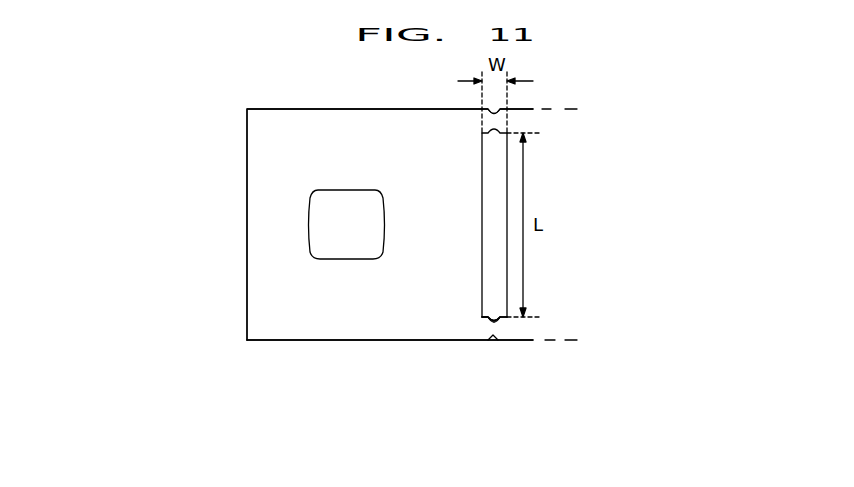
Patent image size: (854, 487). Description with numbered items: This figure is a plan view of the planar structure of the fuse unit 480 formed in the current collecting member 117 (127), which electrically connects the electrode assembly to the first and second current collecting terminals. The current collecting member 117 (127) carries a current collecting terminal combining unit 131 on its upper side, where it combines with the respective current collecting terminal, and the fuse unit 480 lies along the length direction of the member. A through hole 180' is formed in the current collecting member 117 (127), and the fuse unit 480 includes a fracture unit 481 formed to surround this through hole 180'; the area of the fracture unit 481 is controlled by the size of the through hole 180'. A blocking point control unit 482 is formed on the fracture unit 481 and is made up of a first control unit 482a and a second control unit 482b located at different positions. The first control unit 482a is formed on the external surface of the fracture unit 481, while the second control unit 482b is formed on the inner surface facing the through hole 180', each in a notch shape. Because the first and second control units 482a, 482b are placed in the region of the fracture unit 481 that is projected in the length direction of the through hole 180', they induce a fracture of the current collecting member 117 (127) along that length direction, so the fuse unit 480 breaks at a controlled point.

The current collecting member 117 is at (243, 230).
The current collecting member 127 is at (390, 224).
The current collecting terminal combining unit 131 is at (347, 247).
The through hole 180' is at (450, 185).
The fuse unit 480 is at (475, 445).
The fracture unit 481 is at (497, 328).
The blocking point control unit 482 is at (443, 405).
The first control unit 482a is at (494, 338).
The second control unit 482b is at (491, 319).